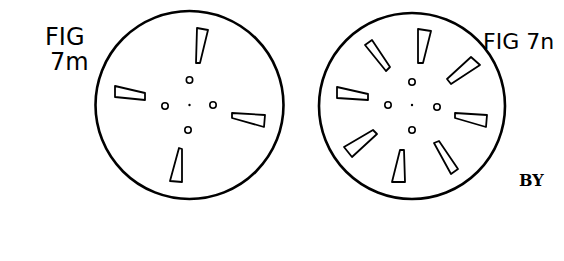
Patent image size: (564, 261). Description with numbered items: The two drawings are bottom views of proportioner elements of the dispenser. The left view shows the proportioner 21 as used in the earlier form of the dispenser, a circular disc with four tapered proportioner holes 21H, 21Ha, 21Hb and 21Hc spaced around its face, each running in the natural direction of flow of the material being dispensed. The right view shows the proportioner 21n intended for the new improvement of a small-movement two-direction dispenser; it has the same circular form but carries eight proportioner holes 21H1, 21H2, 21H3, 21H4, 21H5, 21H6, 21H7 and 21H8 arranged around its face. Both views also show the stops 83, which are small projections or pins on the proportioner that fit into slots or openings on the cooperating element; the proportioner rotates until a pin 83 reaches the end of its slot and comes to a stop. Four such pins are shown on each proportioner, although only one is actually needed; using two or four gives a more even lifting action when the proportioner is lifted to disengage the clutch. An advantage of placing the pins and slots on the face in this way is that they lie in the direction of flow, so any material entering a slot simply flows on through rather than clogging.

In FIG. 7M, the proportioner 21 is at (147, 20).
In FIG. 7N, the proportioner 21n is at (505, 108).
In FIG. 7M, the stops 83 is at (194, 78).
In FIG. 7N, the stops 83 is at (437, 110).
In FIG. 7M, the hole 21H is at (206, 28).
In FIG. 7M, the hole 21Ha is at (258, 127).
In FIG. 7M, the hole 21Hb is at (178, 182).
In FIG. 7M, the hole 21Hc is at (115, 97).
In FIG. 7N, the proportioner hole 21H1 is at (431, 30).
In FIG. 7N, the proportioner hole 21H2 is at (477, 65).
In FIG. 7N, the proportioner hole 21H3 is at (488, 121).
In FIG. 7N, the proportioner hole 21H4 is at (453, 172).
In FIG. 7N, the proportioner hole 21H5 is at (400, 182).
In FIG. 7N, the proportioner hole 21H6 is at (348, 152).
In FIG. 7N, the proportioner hole 21H7 is at (337, 96).
In FIG. 7N, the proportioner hole 21H8 is at (370, 40).